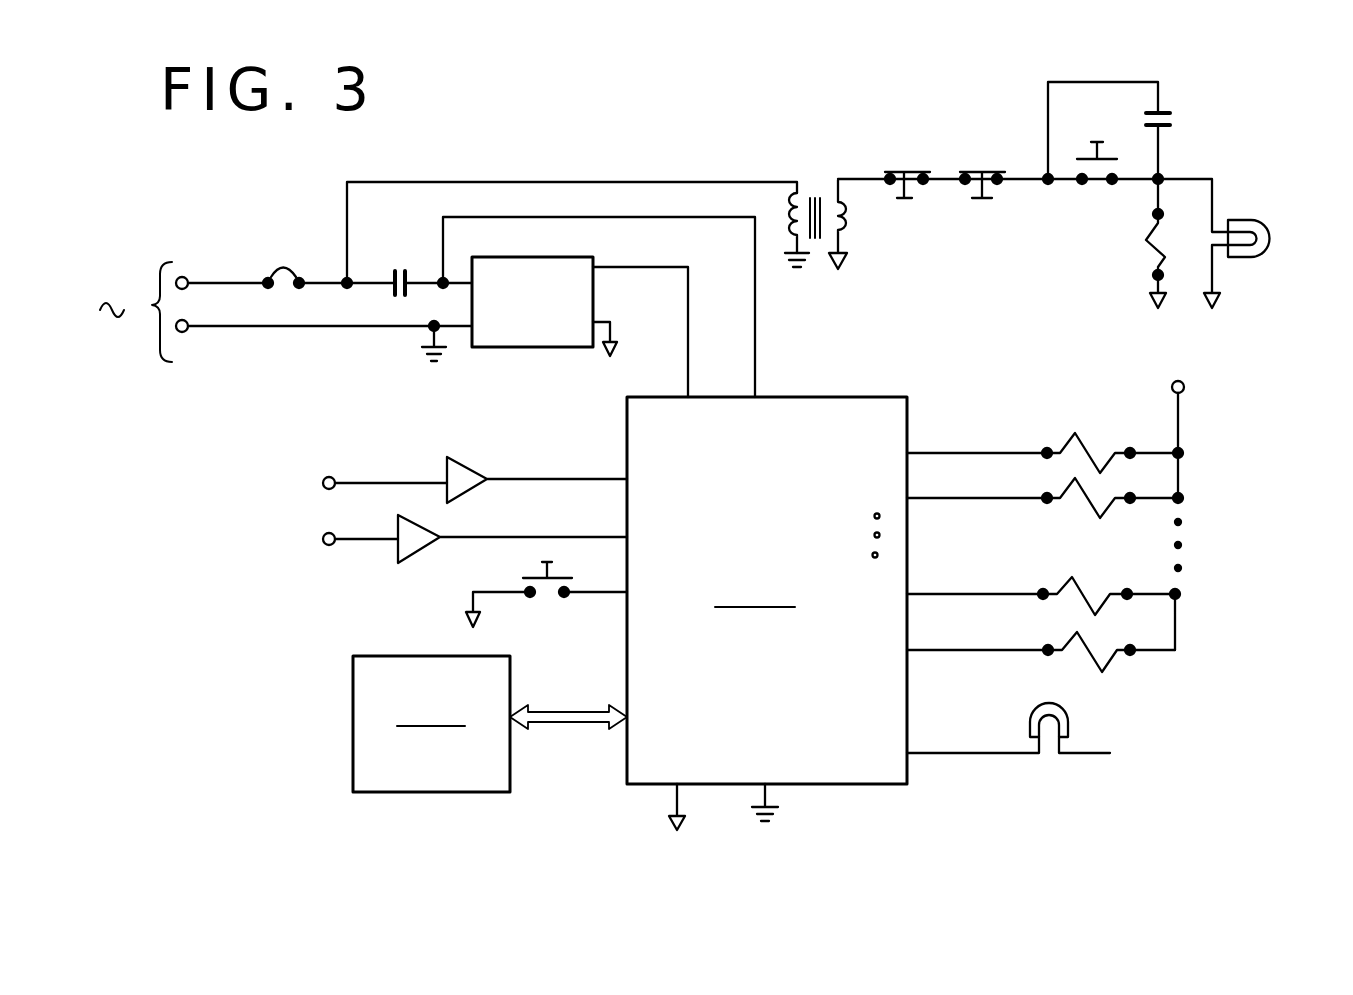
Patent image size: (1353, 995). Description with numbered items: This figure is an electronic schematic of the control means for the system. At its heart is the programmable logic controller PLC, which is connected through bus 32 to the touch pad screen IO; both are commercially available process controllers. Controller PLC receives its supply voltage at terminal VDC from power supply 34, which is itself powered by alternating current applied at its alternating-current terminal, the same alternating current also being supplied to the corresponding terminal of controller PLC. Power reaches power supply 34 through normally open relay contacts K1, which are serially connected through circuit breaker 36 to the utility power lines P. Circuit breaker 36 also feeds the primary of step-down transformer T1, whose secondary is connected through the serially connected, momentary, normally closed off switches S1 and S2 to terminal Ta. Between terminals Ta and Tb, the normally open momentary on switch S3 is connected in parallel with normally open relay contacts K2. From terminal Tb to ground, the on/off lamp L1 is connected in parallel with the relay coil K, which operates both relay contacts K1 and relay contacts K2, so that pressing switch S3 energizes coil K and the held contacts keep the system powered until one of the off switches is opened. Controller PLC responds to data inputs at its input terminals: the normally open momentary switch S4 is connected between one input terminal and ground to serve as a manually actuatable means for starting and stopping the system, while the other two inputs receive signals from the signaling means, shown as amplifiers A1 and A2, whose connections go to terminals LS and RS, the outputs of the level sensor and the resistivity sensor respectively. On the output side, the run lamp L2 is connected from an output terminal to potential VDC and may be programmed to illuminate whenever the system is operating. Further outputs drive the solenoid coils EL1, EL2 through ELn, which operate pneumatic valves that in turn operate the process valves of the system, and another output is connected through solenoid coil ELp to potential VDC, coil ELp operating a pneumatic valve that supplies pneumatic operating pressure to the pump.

The utility power lines P is at (153, 276).
The circuit breaker 36 is at (307, 213).
The relay contacts K1 is at (411, 261).
The power supply 34 is at (503, 348).
The step-down transformer T1 is at (818, 176).
The off switch S1 is at (903, 162).
The off switch S2 is at (985, 160).
The on switch S3 is at (1118, 102).
The relay contacts K2 is at (1181, 103).
The terminal Ta is at (1048, 188).
The terminal Tb is at (1167, 170).
The relay coil K is at (1140, 252).
The on/off lamp L1 is at (1273, 242).
The programmable logic controller PLC is at (767, 613).
The level sensor output terminal LS is at (342, 486).
The resistivity sensor output terminal RS is at (319, 542).
The amplifier A1 is at (460, 460).
The amplifier A2 is at (410, 553).
The momentary switch S4 is at (523, 573).
The touch pad screen IO is at (431, 724).
The bus 32 is at (558, 722).
The supply voltage terminal VDC is at (1180, 459).
The solenoid coil ELp is at (1073, 418).
The solenoid coil ELn is at (1147, 540).
The solenoid coil EL2 is at (1054, 571).
The solenoid coil EL1 is at (1055, 628).
The run lamp L2 is at (1050, 703).